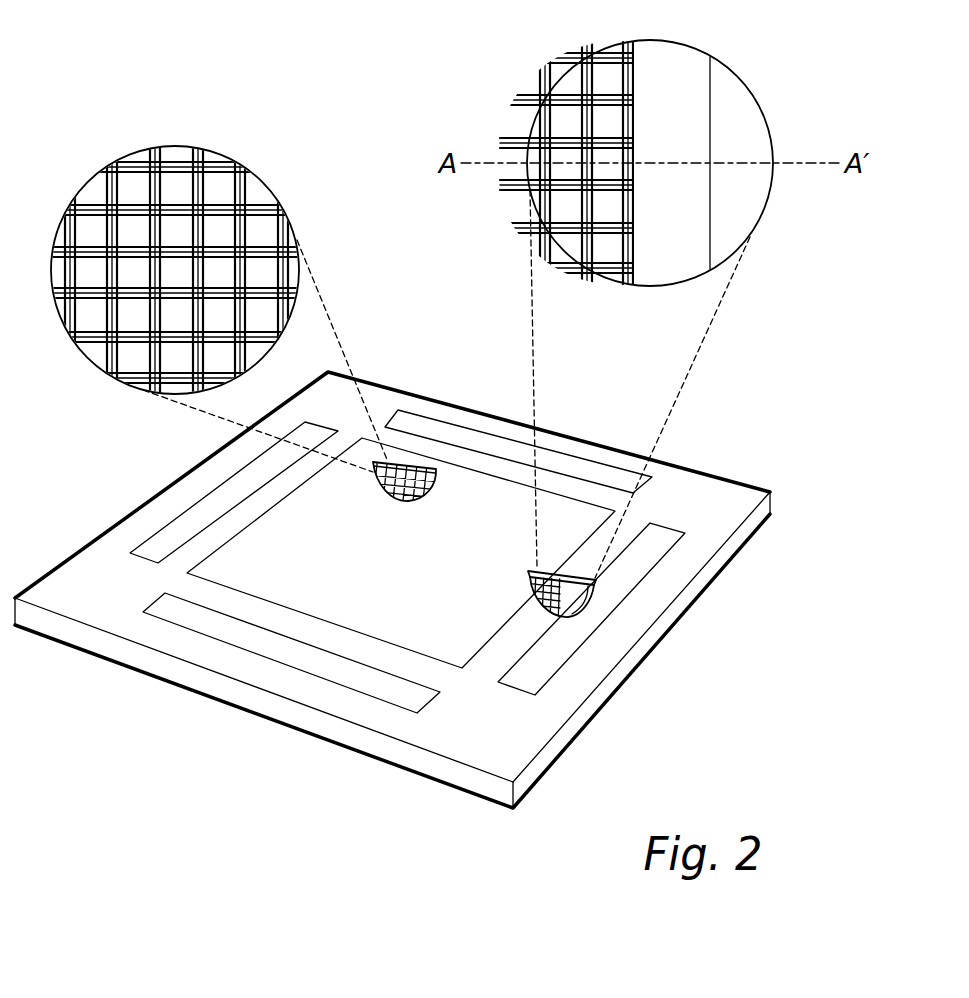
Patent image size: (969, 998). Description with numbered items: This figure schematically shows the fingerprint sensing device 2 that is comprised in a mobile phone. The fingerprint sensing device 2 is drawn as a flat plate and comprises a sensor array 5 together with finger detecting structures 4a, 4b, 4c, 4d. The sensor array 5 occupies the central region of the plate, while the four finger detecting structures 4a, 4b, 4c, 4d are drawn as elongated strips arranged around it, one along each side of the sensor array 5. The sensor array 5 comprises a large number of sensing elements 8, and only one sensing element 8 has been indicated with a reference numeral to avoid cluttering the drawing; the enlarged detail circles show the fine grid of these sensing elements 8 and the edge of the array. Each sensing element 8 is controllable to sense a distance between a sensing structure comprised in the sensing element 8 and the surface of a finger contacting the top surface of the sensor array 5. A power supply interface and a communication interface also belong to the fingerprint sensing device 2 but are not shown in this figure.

The fingerprint sensing device 2 is at (470, 347).
The finger detecting structure 4a is at (637, 570).
The finger detecting structure 4b is at (513, 453).
The finger detecting structure 4c is at (218, 505).
The finger detecting structure 4d is at (345, 677).
The sensor array 5 is at (243, 563).
The sensing element 8 is at (218, 313).